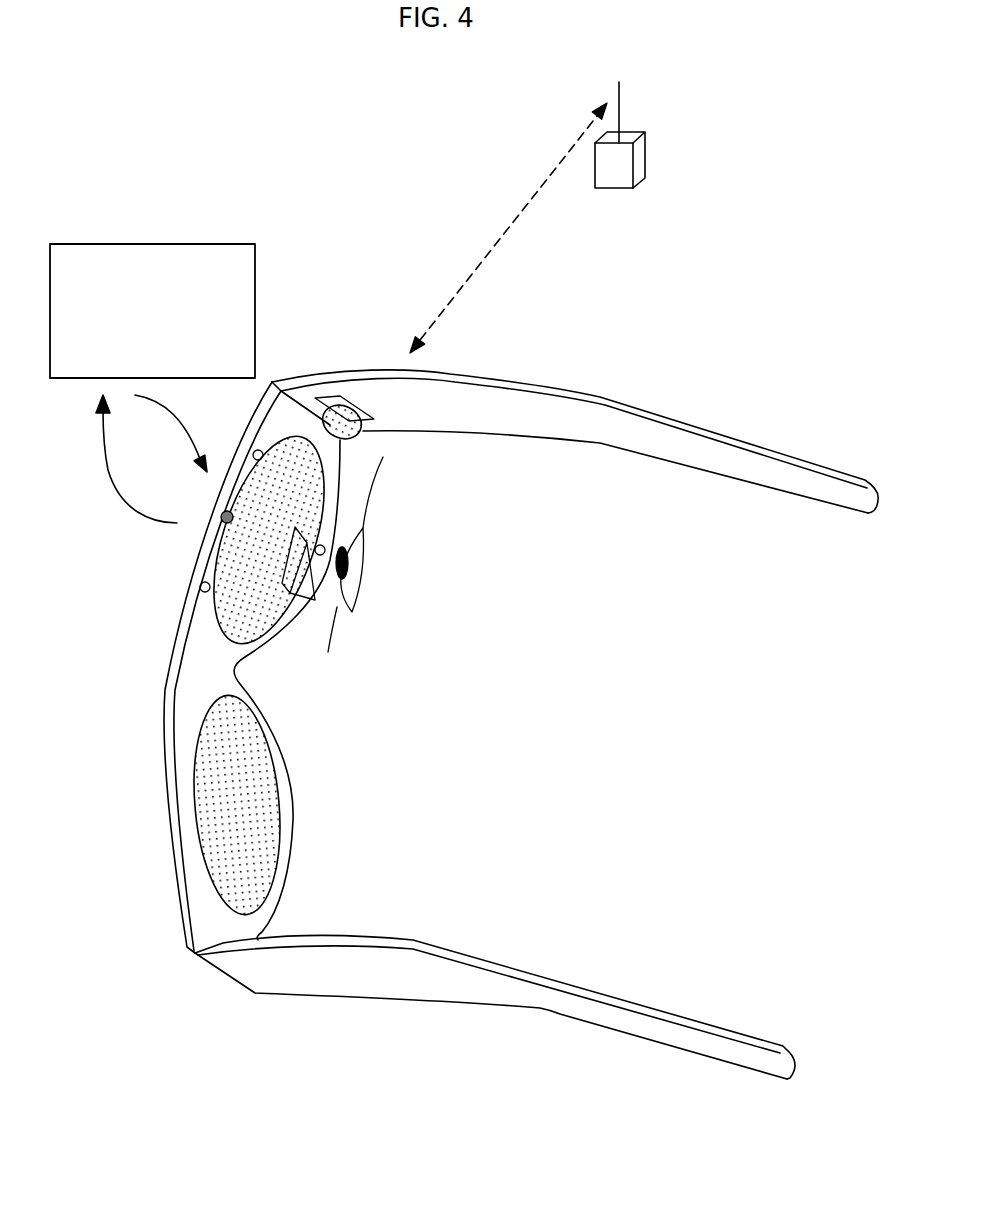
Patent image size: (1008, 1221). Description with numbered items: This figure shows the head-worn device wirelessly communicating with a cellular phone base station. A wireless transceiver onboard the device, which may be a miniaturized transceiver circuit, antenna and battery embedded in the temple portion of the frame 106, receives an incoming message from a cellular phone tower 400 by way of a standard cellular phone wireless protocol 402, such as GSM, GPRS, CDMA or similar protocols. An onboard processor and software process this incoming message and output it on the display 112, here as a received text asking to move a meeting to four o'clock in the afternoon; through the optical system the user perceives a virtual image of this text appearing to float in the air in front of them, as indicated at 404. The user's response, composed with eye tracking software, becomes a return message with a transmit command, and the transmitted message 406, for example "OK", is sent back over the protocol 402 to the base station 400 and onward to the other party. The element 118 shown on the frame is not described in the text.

The frame 106 is at (597, 390).
The display 112 is at (347, 400).
The finger-operable touch pad 118 is at (223, 512).
The cellular phone tower 400 is at (628, 200).
The wireless protocol 402 is at (510, 212).
The virtual image of text message 404 is at (240, 266).
The transmitted message 406 is at (135, 333).